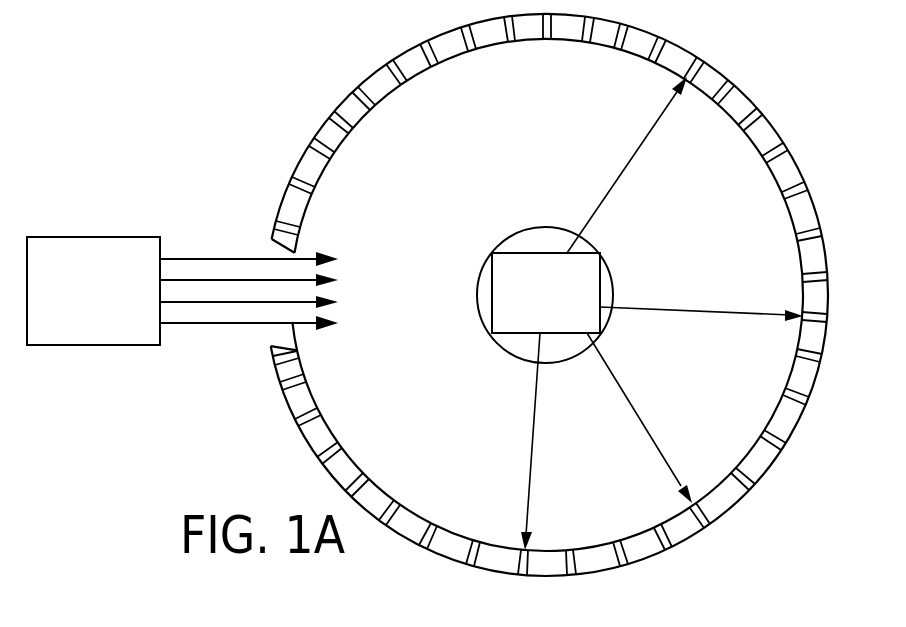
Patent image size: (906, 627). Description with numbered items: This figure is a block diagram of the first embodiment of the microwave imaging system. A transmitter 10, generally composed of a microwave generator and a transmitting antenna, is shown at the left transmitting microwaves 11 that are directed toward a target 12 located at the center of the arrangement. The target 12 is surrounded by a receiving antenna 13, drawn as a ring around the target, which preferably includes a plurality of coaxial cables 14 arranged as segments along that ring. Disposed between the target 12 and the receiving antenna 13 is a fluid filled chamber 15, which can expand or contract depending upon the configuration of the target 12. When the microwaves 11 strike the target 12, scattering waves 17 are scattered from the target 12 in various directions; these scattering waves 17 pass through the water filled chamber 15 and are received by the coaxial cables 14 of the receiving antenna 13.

The transmitter 10 is at (105, 237).
The microwaves 11 is at (215, 280).
The target 12 is at (608, 267).
The receiving antenna 13 is at (808, 420).
The coaxial cables 14 is at (778, 442).
The fluid filled chamber 15 is at (603, 472).
The scattering waves 17 is at (627, 162).